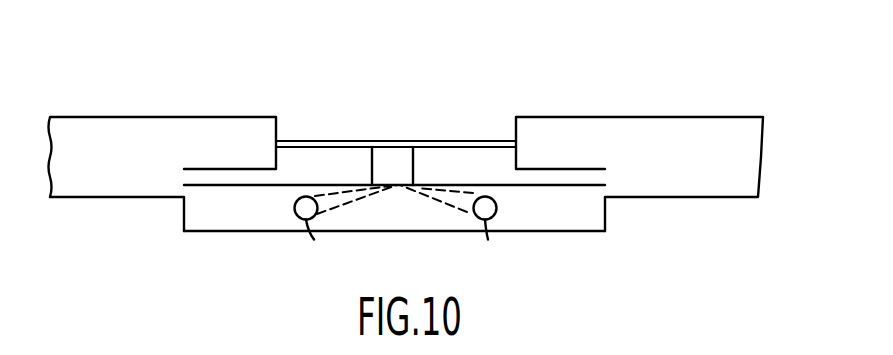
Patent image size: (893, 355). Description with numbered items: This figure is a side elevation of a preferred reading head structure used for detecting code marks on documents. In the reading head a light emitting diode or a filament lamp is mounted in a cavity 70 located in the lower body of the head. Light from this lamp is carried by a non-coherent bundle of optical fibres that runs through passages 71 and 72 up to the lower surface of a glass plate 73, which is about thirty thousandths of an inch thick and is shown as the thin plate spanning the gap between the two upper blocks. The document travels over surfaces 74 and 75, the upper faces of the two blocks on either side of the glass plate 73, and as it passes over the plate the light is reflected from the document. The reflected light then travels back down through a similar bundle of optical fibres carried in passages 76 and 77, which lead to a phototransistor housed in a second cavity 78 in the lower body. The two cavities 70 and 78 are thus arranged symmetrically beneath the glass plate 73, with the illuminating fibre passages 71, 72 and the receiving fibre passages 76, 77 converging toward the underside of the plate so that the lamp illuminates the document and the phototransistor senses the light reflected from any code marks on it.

The cavity 70 is at (314, 239).
The passage 71 is at (349, 192).
The passage 72 is at (382, 157).
The glass plate 73 is at (471, 140).
The surface 74 is at (183, 115).
The surface 75 is at (648, 128).
The passage 76 is at (410, 157).
The passage 77 is at (455, 193).
The cavity 78 is at (489, 239).